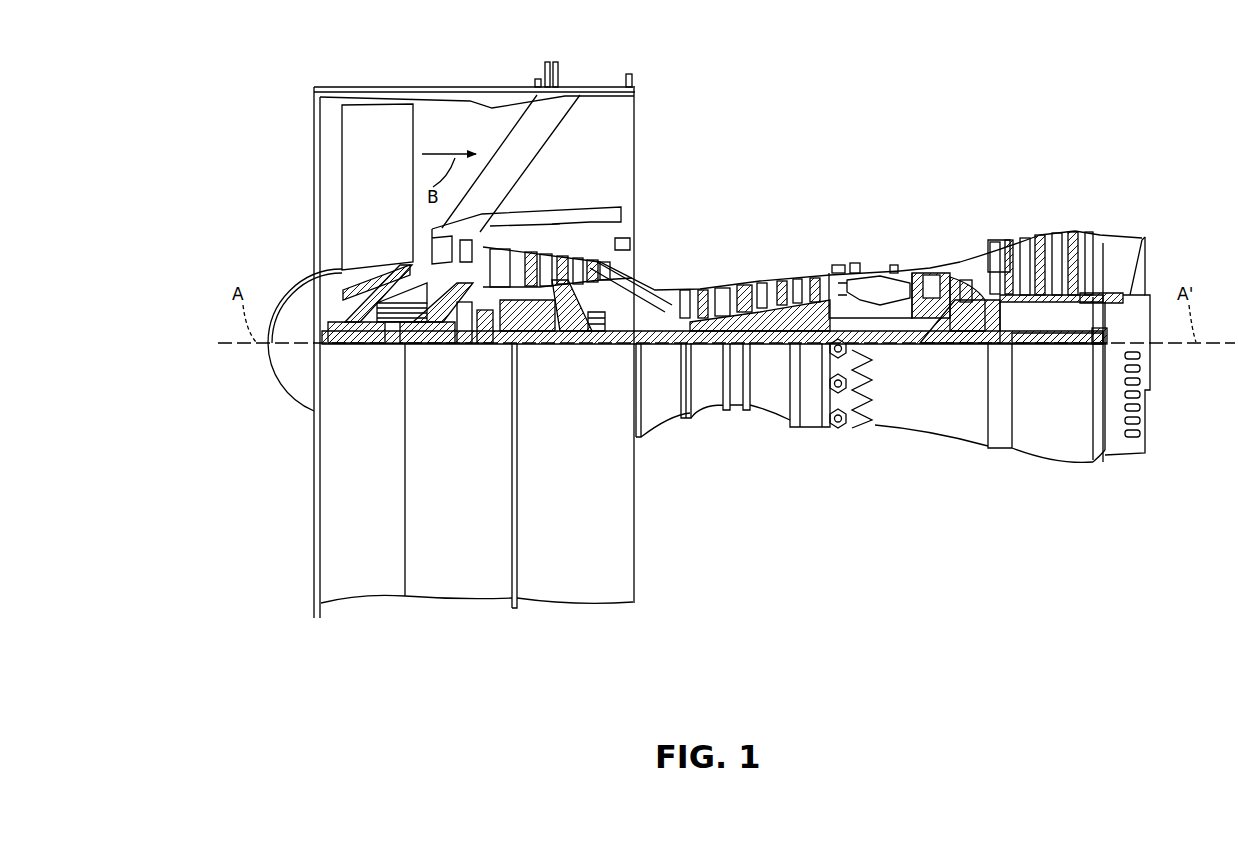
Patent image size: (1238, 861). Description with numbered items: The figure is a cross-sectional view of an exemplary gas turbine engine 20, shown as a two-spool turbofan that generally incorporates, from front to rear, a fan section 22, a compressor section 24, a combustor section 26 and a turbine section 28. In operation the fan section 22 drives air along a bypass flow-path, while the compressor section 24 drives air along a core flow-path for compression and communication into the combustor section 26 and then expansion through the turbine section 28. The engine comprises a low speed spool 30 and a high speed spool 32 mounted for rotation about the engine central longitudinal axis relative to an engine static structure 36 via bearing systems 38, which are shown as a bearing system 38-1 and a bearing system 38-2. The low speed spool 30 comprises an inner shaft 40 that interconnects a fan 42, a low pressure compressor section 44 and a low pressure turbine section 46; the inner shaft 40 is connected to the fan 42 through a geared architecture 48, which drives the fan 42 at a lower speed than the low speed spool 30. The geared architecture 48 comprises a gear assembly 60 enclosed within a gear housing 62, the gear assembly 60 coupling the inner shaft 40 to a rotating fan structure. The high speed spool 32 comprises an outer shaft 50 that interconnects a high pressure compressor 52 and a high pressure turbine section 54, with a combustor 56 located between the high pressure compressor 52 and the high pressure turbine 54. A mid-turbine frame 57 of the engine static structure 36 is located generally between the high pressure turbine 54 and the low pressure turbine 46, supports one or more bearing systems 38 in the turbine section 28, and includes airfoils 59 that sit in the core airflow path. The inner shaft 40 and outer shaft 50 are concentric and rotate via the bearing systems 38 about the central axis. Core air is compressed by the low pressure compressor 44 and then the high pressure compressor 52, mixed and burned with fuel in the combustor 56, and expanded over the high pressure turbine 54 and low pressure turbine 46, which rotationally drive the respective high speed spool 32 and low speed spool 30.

The gas turbine engine 20 is at (909, 101).
The fan section 22 is at (495, 70).
The compressor section 24 is at (517, 176).
The combustor section 26 is at (917, 176).
The turbine section 28 is at (1097, 176).
The low speed spool 30 is at (775, 352).
The high speed spool 32 is at (820, 273).
The engine static structure 36 is at (295, 589).
The bearing systems 38 is at (975, 300).
The bearing system 38-1 is at (385, 349).
The bearing system 38-2 is at (598, 349).
The inner shaft 40 is at (652, 347).
The fan 42 is at (378, 202).
The low pressure compressor section 44 is at (618, 247).
The low pressure turbine section 46 is at (1056, 239).
The geared architecture 48 is at (495, 397).
The outer shaft 50 is at (881, 348).
The high pressure compressor 52 is at (773, 283).
The high pressure turbine section 54 is at (931, 263).
The combustor 56 is at (880, 273).
The mid-turbine frame 57 is at (968, 272).
The airfoils 59 is at (1006, 244).
The gear assembly 60 is at (478, 349).
The gear housing 62 is at (488, 349).